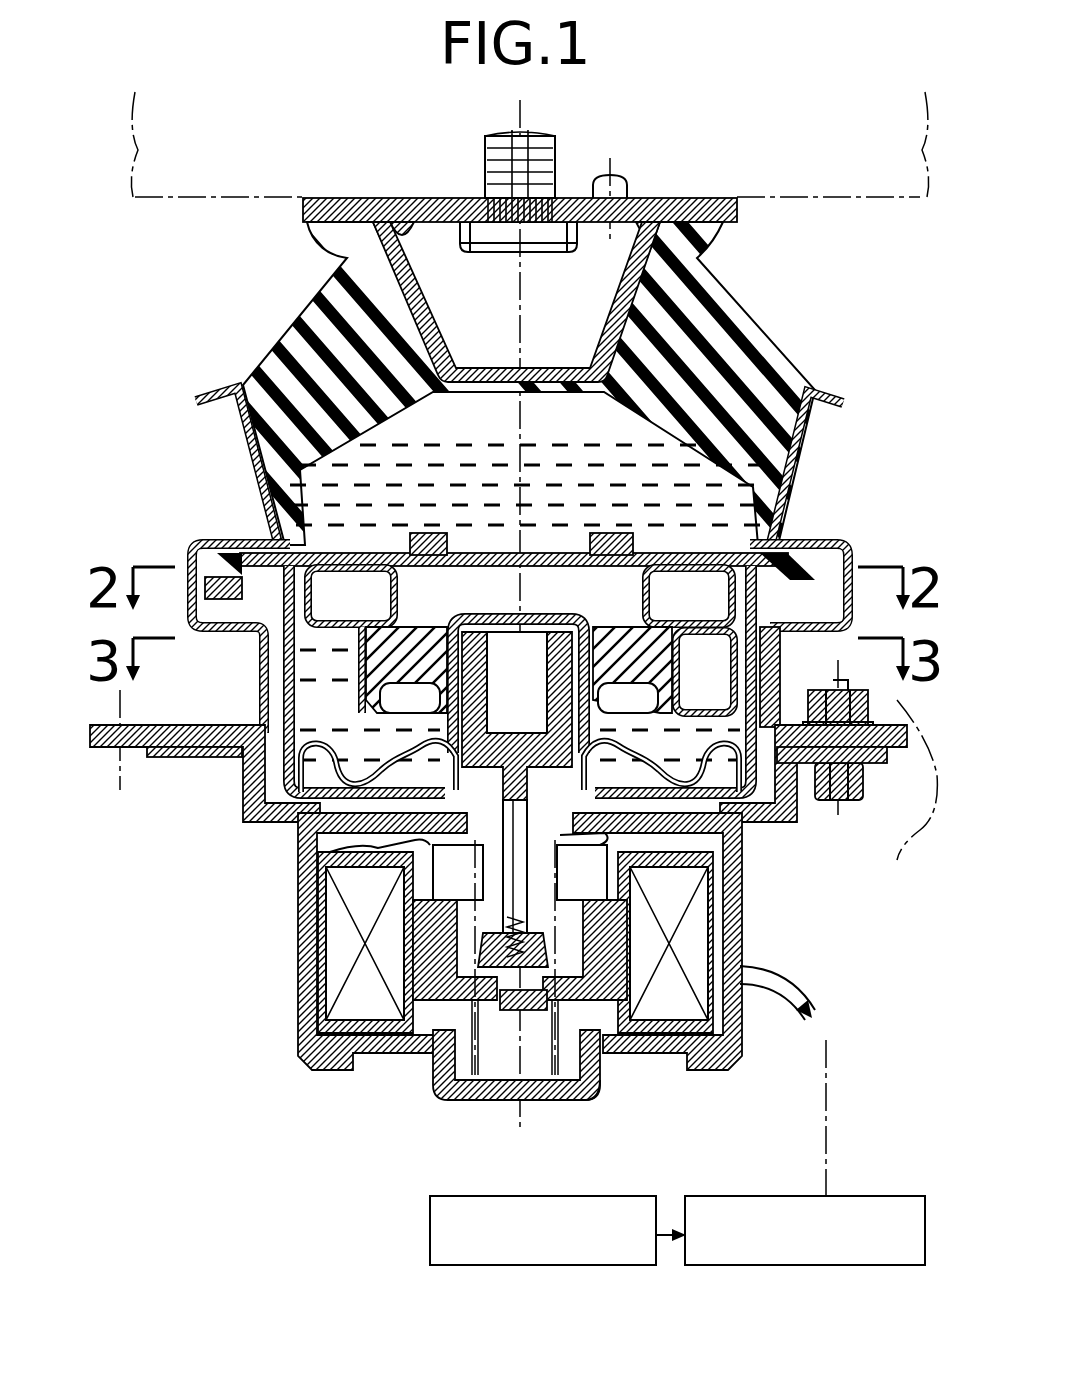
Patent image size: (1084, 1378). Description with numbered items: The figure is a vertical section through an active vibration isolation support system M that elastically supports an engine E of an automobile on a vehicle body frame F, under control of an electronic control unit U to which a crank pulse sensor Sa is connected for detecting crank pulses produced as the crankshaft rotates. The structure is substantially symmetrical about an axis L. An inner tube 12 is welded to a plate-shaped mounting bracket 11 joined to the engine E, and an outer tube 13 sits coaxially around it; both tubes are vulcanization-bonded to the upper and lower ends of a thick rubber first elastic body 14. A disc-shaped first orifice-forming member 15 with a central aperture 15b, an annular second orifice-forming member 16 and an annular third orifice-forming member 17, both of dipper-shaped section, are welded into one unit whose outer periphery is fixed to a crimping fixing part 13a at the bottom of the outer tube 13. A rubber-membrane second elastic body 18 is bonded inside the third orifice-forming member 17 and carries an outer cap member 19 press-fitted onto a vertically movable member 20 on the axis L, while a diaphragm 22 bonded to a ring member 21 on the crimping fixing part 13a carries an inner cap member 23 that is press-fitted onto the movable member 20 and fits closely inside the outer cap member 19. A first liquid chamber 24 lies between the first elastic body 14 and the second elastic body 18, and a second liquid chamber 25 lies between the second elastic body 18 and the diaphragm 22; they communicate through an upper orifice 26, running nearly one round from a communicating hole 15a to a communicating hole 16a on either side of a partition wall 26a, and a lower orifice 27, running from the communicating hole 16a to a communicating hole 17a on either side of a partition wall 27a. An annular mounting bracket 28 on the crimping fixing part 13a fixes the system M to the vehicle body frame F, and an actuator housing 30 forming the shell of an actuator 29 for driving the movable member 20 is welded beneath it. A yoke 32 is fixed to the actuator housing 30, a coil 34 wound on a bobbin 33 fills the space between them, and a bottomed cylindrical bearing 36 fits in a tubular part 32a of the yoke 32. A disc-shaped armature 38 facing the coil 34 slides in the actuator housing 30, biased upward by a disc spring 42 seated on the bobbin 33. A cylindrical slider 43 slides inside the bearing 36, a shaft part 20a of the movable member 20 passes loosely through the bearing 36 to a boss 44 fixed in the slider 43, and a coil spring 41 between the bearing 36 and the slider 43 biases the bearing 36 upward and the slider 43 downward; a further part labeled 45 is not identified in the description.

The plate-shaped mounting bracket 11 is at (705, 200).
The inner tube 12 is at (430, 302).
The outer tube 13 is at (233, 452).
The crimping fixing part 13a is at (198, 548).
The first elastic body 14 is at (300, 335).
The first orifice-forming member 15 is at (418, 526).
The communicating hole 15a is at (695, 580).
The aperture 15b is at (478, 548).
The second orifice-forming member 16 is at (328, 606).
The communicating hole 16a is at (689, 596).
The third orifice-forming member 17 is at (368, 596).
The communicating hole 17a is at (708, 672).
The second elastic body 18 is at (410, 645).
The outer cap member 19 is at (537, 620).
The movable member 20 is at (470, 770).
The shaft part 20a is at (503, 775).
The ring member 21 is at (205, 572).
The diaphragm 22 is at (395, 770).
The inner cap member 23 is at (410, 706).
The first liquid chamber 24 is at (560, 472).
The second liquid chamber 25 is at (632, 678).
The upper orifice 26 is at (325, 570).
The partition wall 26a is at (655, 580).
The lower orifice 27 is at (312, 650).
The partition wall 27a is at (728, 680).
The annular mounting bracket 28 is at (180, 738).
The actuator 29 is at (248, 931).
The actuator housing 30 is at (298, 890).
The yoke 32 is at (485, 1110).
The tubular part 32a is at (630, 955).
The bobbin 33 is at (330, 1000).
The coil 34 is at (330, 955).
The bearing 36 is at (570, 815).
The armature 38 is at (650, 810).
The coil spring 41 is at (555, 815).
The disc spring 42 is at (335, 850).
The slider 43 is at (413, 927).
The boss 44 is at (530, 1098).
The bearing 45 is at (585, 1075).
The axis L is at (533, 262).
The engine E is at (820, 200).
The active vibration isolation support system M is at (835, 475).
The vehicle body frame F is at (855, 736).
The electronic control unit U is at (865, 1196).
The crank pulse sensor Sa is at (430, 1238).